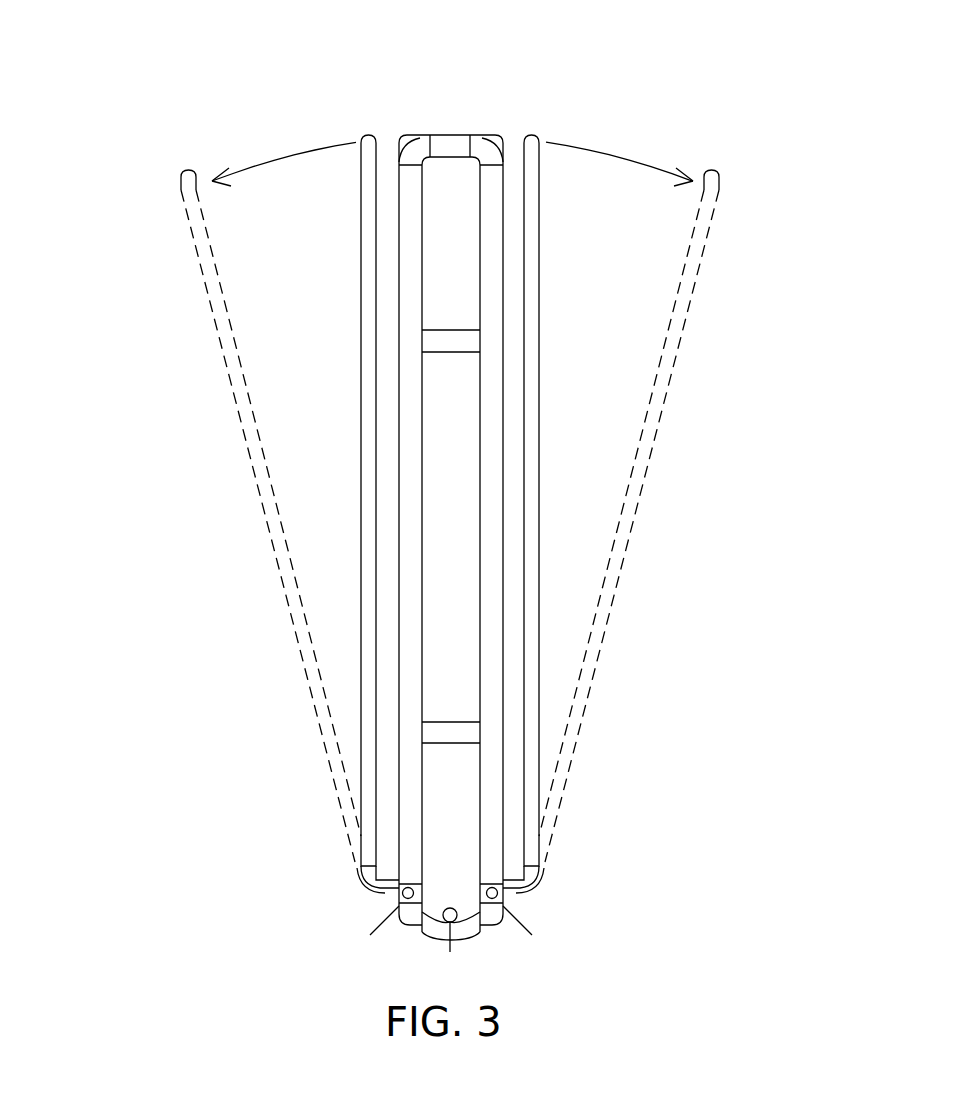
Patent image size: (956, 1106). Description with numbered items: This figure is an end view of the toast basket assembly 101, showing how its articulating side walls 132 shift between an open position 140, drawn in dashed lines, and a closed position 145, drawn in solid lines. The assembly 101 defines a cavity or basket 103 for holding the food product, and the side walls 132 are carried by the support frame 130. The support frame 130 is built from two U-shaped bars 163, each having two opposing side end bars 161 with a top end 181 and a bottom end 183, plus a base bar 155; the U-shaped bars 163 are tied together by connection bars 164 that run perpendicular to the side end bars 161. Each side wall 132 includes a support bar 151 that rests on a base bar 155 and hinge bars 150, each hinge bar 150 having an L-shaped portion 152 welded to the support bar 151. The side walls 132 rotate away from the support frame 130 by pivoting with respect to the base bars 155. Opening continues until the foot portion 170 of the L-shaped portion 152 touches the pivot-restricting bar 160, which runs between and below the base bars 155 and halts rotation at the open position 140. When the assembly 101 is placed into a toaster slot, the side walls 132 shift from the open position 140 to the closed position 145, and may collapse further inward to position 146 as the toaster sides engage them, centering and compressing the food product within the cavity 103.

The toast basket assembly 101 is at (556, 72).
The cavity or basket 103 is at (470, 533).
The support frame 130 is at (448, 136).
The articulating side walls 132 is at (363, 295).
The open position 140 is at (178, 186).
The closed position 145 is at (368, 134).
The position 146 is at (437, 208).
The hinge bar 150 is at (363, 371).
The support bar 151 is at (403, 898).
The L-shaped portion 152 is at (392, 878).
The base bar 155 is at (410, 912).
The pivot-restricting bar 160 is at (452, 936).
The side end bar 161 is at (413, 535).
The U-shaped bar 163 is at (413, 455).
The connection bar 164 is at (456, 330).
The foot portion 170 is at (432, 919).
The top end 181 is at (508, 165).
The bottom end 183 is at (508, 858).